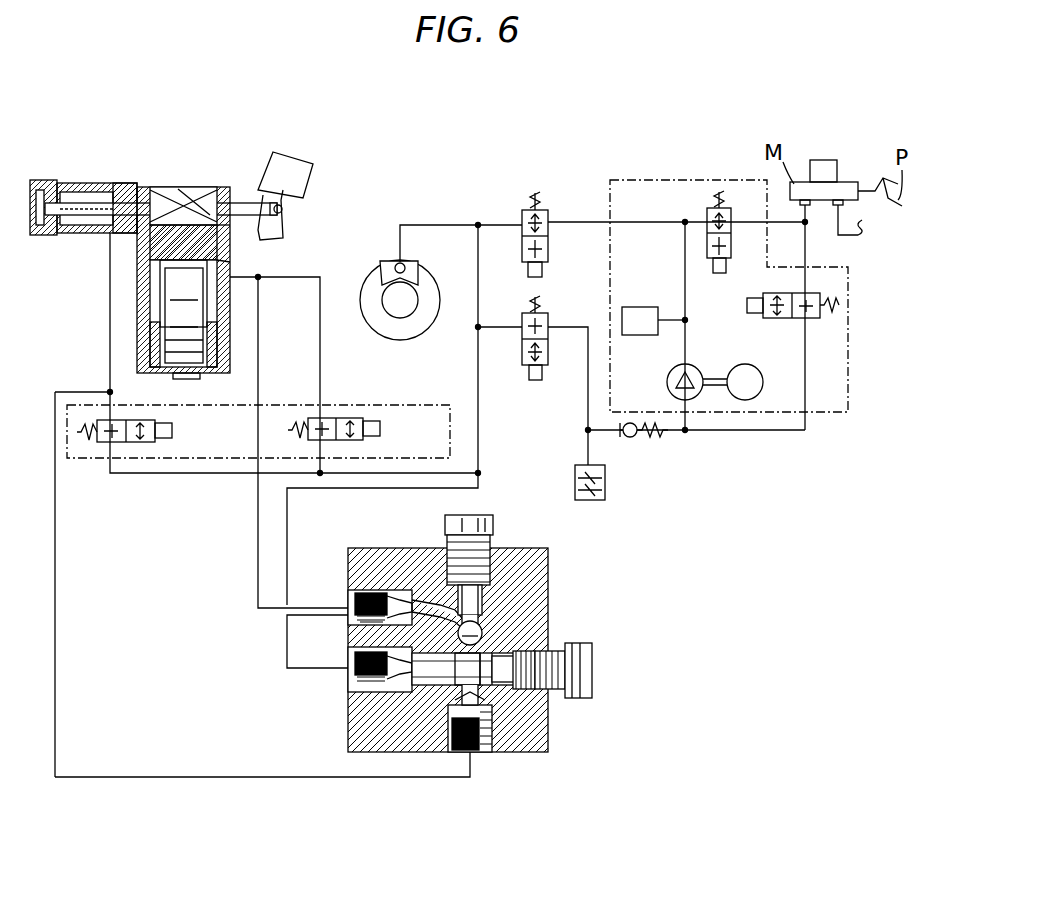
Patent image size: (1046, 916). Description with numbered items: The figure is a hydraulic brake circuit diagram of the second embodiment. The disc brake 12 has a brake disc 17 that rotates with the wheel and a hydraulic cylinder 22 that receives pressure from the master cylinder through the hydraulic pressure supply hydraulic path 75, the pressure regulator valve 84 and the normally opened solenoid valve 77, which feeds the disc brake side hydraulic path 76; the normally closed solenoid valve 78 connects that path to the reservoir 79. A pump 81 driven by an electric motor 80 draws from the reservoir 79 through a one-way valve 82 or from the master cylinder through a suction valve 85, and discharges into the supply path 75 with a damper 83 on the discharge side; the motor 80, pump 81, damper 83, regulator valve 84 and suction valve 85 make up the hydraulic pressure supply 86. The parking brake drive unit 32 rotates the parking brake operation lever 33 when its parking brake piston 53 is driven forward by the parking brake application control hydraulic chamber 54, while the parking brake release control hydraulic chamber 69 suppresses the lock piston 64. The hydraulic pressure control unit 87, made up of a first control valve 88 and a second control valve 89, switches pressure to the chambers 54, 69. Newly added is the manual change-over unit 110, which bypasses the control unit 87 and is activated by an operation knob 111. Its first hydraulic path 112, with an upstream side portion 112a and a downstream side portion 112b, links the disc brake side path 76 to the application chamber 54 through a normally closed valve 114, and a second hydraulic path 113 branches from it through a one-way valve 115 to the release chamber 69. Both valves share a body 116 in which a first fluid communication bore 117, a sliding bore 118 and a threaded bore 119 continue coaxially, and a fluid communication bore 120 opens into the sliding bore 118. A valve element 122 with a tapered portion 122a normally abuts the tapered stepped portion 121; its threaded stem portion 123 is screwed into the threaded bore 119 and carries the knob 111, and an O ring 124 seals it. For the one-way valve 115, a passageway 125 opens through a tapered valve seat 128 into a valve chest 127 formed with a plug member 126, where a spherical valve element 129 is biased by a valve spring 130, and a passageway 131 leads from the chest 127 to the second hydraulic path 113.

The disc brake 12 is at (391, 288).
The brake disc 17 is at (413, 325).
The hydraulic cylinder 22 is at (409, 273).
The parking brake drive unit 32 is at (150, 248).
The parking brake operation lever 33 is at (276, 176).
The parking brake piston 53 is at (46, 234).
The parking brake application control hydraulic chamber 54 is at (93, 233).
The lock piston 64 is at (230, 247).
The parking brake release control hydraulic chamber 69 is at (230, 263).
The hydraulic pressure supply hydraulic path 75 is at (596, 222).
The disc brake side hydraulic path 76 is at (497, 223).
The normally opened solenoid valve 77 is at (521, 212).
The normally closed solenoid valve 78 is at (521, 327).
The reservoir 79 is at (603, 470).
The electric motor 80 is at (749, 366).
The pump 81 is at (667, 382).
The one-way valve 82 is at (652, 443).
The damper 83 is at (645, 305).
The pressure regulator valve 84 is at (706, 211).
The suction valve 85 is at (773, 292).
The hydraulic pressure supply 86 is at (722, 317).
The hydraulic pressure control unit 87 is at (258, 408).
The first control valve 88 is at (172, 438).
The second control valve 89 is at (380, 440).
The manual change-over unit 110 is at (470, 636).
The operation knob 111 is at (583, 665).
The first hydraulic path 112 is at (262, 584).
The upstream side portion 112a is at (288, 530).
The downstream side portion 112b is at (100, 697).
The second hydraulic path 113 is at (258, 586).
The normally closed valve 114 is at (348, 735).
The one-way valve 115 is at (550, 600).
The body 116 is at (497, 548).
The first fluid communication bore 117 is at (348, 700).
The sliding bore 118 is at (548, 725).
The threaded bore 119 is at (553, 651).
The fluid communication bore 120 is at (492, 752).
The tapered stepped portion 121 is at (434, 646).
The valve element 122 is at (446, 690).
The tapered portion 122a is at (341, 639).
The threaded stem portion 123 is at (560, 690).
The O ring 124 is at (522, 655).
The passageway 125 is at (550, 612).
The plug member 126 is at (470, 526).
The valve chest 127 is at (540, 548).
The tapered valve seat 128 is at (548, 580).
The spherical valve element 129 is at (412, 580).
The valve spring 130 is at (444, 580).
The passageway 131 is at (368, 578).